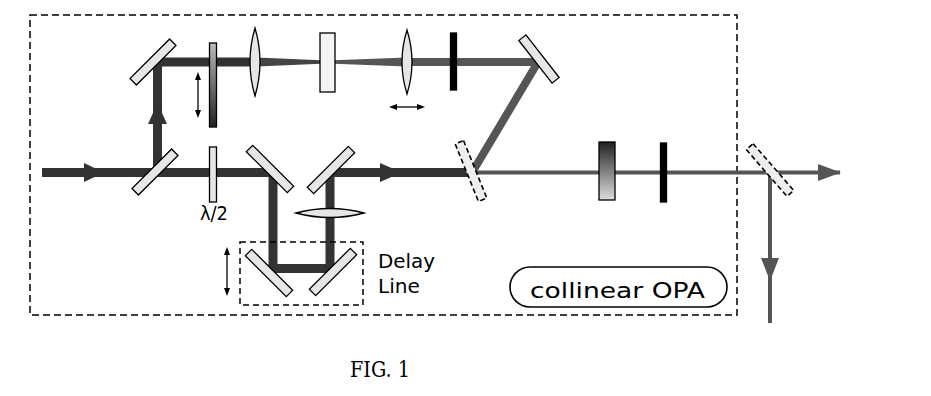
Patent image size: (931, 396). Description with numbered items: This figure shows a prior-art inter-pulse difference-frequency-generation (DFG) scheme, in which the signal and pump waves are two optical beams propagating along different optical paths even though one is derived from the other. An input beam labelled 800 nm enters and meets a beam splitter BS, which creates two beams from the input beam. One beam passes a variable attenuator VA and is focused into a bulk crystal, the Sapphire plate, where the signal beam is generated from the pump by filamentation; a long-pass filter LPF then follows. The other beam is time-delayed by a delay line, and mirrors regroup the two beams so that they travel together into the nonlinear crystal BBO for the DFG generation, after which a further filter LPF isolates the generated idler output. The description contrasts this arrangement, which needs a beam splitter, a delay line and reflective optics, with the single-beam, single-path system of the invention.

The 800 nm pump beam 800 is at (159, 152).
The beam splitter BS is at (154, 186).
The variable attenuator VA is at (222, 85).
The bulk crystal Sapphire is at (355, 75).
The long-pass filter LPF is at (571, 130).
The BBO nonlinear crystal BBO is at (610, 157).
The idler beam idler is at (705, 151).